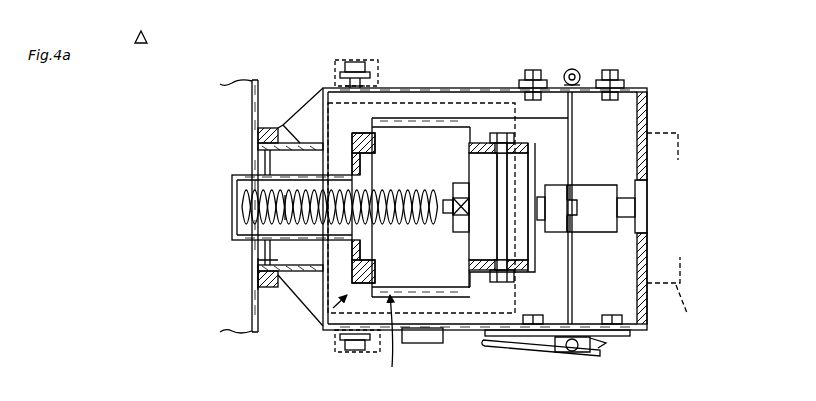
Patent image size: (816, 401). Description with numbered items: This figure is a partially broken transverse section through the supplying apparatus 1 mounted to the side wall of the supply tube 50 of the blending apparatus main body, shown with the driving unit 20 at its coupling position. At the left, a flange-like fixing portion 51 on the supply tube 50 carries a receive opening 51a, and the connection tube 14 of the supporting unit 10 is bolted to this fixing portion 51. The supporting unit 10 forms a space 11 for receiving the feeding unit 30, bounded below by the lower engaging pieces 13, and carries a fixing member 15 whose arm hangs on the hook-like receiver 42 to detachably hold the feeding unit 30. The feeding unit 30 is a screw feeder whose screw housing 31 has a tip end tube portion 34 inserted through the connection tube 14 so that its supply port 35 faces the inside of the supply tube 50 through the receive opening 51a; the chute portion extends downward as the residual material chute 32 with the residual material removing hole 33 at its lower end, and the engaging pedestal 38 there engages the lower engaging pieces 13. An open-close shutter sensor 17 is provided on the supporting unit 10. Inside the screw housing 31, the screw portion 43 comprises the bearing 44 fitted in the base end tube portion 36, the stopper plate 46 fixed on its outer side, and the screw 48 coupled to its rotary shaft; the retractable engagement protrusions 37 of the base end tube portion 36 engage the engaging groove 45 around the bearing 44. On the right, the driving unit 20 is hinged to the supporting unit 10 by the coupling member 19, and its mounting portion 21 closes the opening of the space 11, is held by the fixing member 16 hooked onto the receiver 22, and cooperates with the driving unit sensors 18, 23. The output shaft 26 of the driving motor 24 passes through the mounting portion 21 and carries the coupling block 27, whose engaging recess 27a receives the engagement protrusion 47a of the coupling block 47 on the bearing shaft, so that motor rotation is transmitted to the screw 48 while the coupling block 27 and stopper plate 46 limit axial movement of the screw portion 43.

The supplying apparatus 1 is at (288, 81).
The supporting unit 10 is at (418, 80).
The space for receiving the feeding unit 11 is at (627, 333).
The lower engaging piece 13 is at (488, 100).
The connection tube 14 is at (300, 142).
The fixing member 15 is at (345, 62).
The fixing member 16 is at (537, 341).
The open-close shutter sensor 17 is at (425, 345).
The driving unit sensor 18 is at (567, 351).
The coupling member 19 is at (575, 68).
The driving unit 20 is at (678, 92).
The mounting portion 21 is at (642, 108).
The hook-like receiver 22 is at (603, 343).
The driving unit sensor 23 is at (588, 352).
The driving motor 24 is at (672, 297).
The output shaft 26 is at (623, 202).
The coupling block 27 is at (607, 223).
The engaging recess 27a is at (560, 223).
The feeding unit 30 is at (318, 327).
The screw housing 31 is at (393, 340).
The residual material chute 32 is at (435, 120).
The residual material removing hole 33 is at (383, 137).
The tip end tube portion 34 is at (240, 175).
The supply port 35 is at (228, 210).
The base end tube portion 36 is at (520, 145).
The retractable engagement protrusion 37 is at (472, 135).
The engaging pedestal 38 is at (520, 130).
The hook-like receiver 42 is at (360, 63).
The screw portion 43 is at (438, 185).
The bearing 44 is at (473, 248).
The engaging groove 45 is at (498, 188).
The stopper plate 46 is at (603, 316).
The coupling block 47 is at (560, 193).
The engagement protrusion 47a is at (578, 200).
The screw 48 is at (293, 224).
The supply tube 50 is at (262, 322).
The fixing portion 51 is at (260, 287).
The receive opening 51a is at (252, 261).